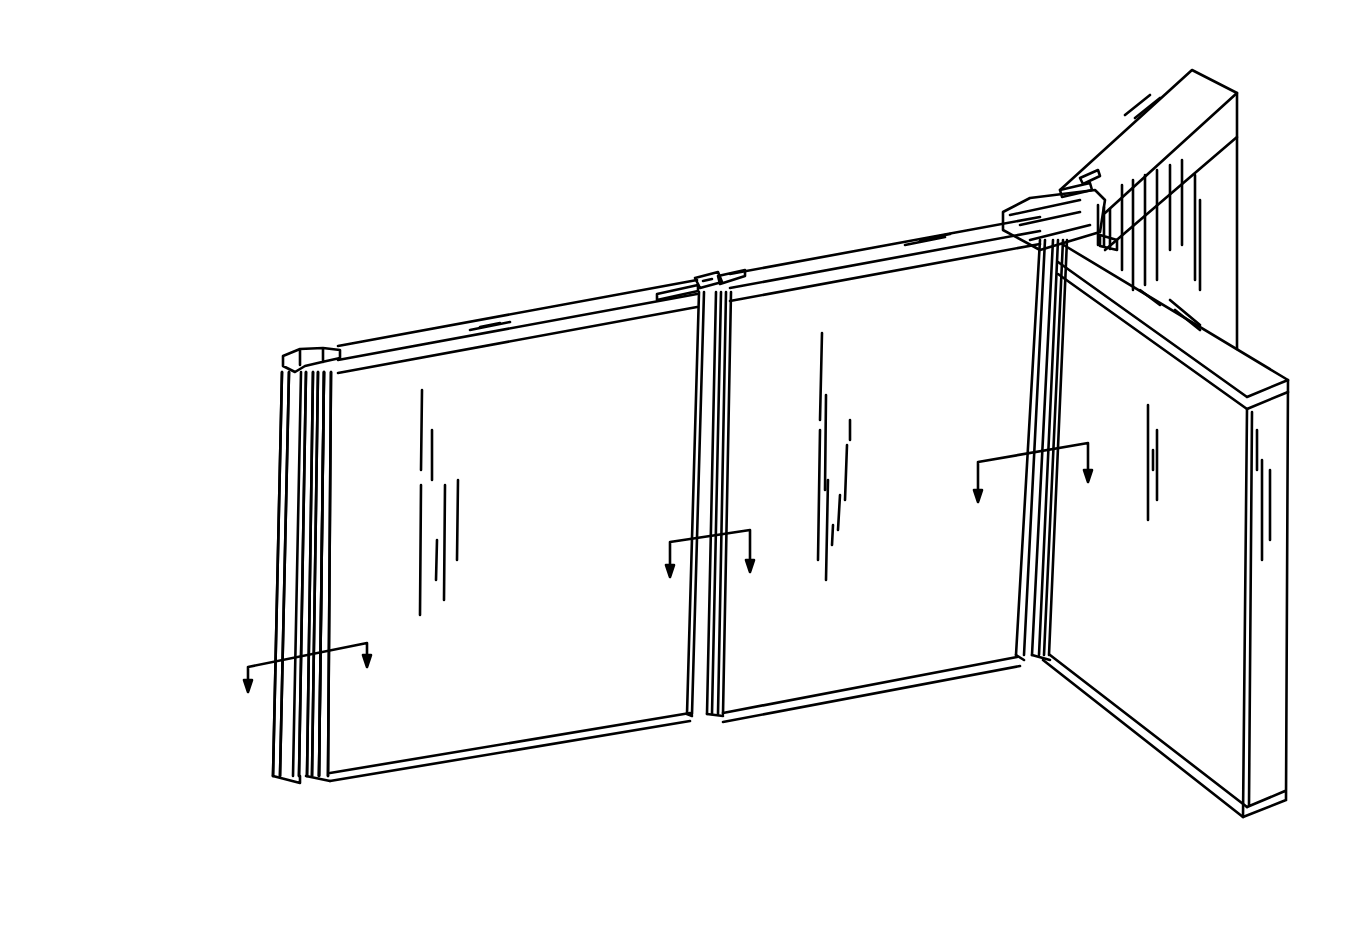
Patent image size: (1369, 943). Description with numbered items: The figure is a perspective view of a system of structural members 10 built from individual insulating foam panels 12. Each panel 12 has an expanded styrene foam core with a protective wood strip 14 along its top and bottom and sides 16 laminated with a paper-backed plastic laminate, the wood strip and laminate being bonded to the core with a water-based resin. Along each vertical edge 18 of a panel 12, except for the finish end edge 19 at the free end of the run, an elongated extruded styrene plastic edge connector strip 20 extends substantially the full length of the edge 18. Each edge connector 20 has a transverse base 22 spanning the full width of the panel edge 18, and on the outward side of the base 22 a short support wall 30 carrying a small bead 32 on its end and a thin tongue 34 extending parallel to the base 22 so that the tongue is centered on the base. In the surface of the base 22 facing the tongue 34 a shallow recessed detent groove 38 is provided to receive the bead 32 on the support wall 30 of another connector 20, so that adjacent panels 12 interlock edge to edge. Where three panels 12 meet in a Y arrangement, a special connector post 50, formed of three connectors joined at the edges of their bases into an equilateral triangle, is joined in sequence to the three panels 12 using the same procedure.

The system of structural members 10 is at (480, 240).
The insulating foam panel 12 is at (577, 297).
The protective wood strip 14 is at (512, 320).
The side 16 is at (620, 343).
The vertical edge 18 is at (688, 278).
The finish end edge 19 is at (1275, 460).
The edge connector strip 20 is at (1153, 190).
The transverse base 22 is at (323, 573).
The support wall 30 is at (290, 360).
The bead 32 is at (283, 473).
The tongue 34 is at (300, 487).
The detent groove 38 is at (314, 405).
The connector post 50 is at (1017, 203).